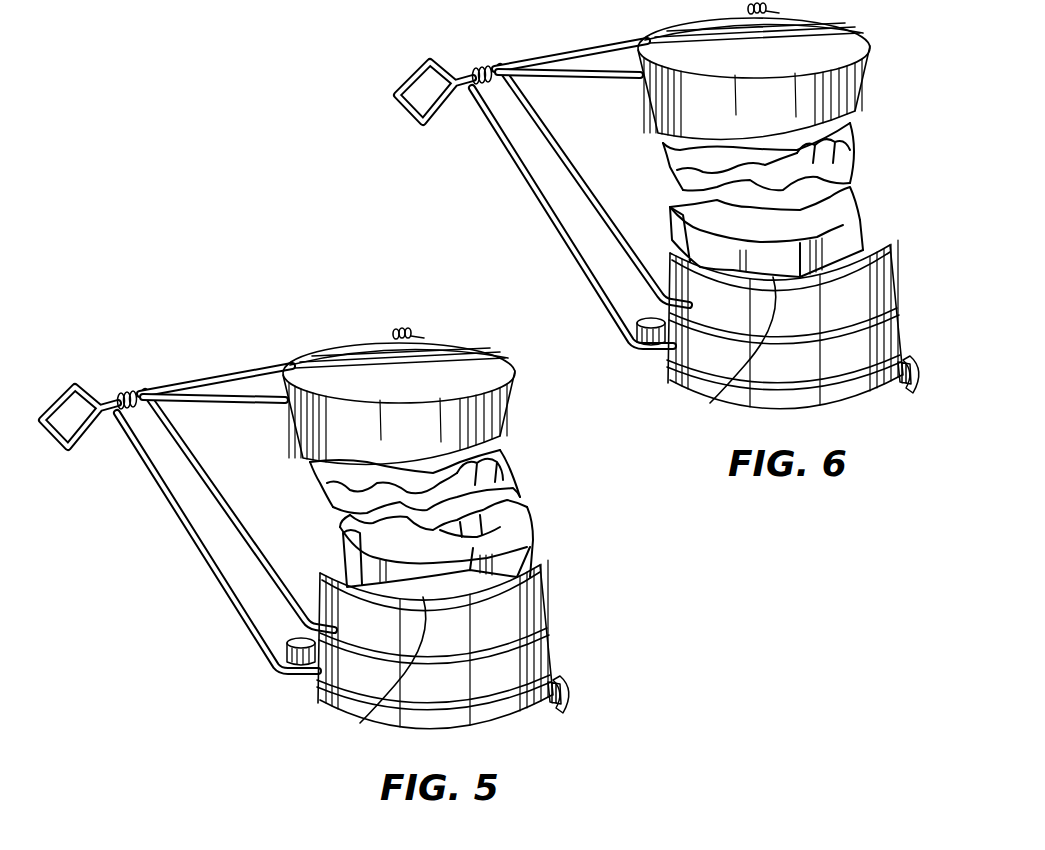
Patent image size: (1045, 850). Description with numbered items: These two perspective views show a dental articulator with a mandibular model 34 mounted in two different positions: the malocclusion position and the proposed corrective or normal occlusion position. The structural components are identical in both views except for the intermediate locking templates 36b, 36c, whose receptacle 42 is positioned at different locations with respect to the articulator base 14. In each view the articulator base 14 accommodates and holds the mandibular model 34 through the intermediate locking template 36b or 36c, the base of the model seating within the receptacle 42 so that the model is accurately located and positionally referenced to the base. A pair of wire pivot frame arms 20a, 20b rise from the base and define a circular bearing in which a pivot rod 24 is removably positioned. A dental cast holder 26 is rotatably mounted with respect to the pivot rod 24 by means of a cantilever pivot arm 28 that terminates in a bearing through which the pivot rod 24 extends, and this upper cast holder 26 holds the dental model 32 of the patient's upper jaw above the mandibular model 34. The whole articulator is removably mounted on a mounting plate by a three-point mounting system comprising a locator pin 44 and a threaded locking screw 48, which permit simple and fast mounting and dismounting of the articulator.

In FIG. 5, the articulator base 14 is at (560, 650).
In FIG. 6, the articulator base 14 is at (900, 337).
In FIG. 5, the wire pivot frame arm 20a is at (214, 572).
In FIG. 6, the wire pivot frame arm 20a is at (570, 249).
In FIG. 5, the wire pivot frame arm 20b is at (243, 528).
In FIG. 6, the wire pivot frame arm 20b is at (603, 217).
In FIG. 5, the pivot rod 24 is at (251, 373).
In FIG. 6, the pivot rod 24 is at (578, 55).
In FIG. 5, the cantilever pivot arm 28 is at (242, 401).
In FIG. 6, the cantilever pivot arm 28 is at (610, 77).
In FIG. 5, the dental cast holder 26 is at (510, 412).
In FIG. 6, the dental cast holder 26 is at (858, 52).
In FIG. 5, the dental model of the upper jaw 32 is at (503, 447).
In FIG. 6, the dental model of the upper jaw 32 is at (853, 122).
In FIG. 5, the mandibular model 34 is at (516, 562).
In FIG. 6, the mandibular model 34 is at (858, 232).
In FIG. 5, the intermediate locking template 36b is at (553, 608).
In FIG. 6, the intermediate locking template 36c is at (893, 290).
In FIG. 5, the receptacle 42 is at (381, 672).
In FIG. 6, the receptacle 42 is at (739, 351).
In FIG. 5, the locator pin 44 is at (282, 673).
In FIG. 6, the locator pin 44 is at (653, 350).
In FIG. 5, the threaded locking screw 48 is at (553, 712).
In FIG. 6, the threaded locking screw 48 is at (907, 390).